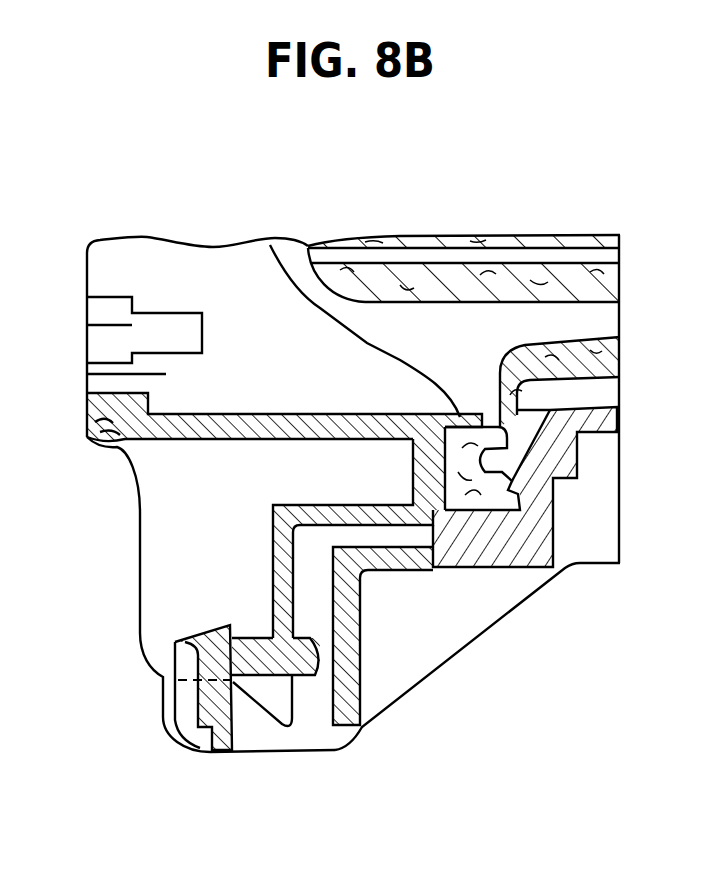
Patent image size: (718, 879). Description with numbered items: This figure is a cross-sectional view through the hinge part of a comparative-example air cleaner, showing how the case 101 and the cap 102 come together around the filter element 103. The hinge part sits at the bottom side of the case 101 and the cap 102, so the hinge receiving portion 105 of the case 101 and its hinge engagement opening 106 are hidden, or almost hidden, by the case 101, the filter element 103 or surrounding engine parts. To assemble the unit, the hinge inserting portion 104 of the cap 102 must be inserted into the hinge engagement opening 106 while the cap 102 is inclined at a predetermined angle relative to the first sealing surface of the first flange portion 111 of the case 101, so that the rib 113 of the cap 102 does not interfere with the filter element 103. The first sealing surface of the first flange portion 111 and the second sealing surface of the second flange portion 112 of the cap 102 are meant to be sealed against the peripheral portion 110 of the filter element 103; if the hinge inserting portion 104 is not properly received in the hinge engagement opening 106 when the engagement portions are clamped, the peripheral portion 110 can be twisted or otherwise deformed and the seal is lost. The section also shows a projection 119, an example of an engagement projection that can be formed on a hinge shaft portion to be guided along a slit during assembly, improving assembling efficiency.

The case 101 is at (612, 432).
The cap 102 is at (152, 433).
The filter element 103 is at (607, 282).
The hinge inserting portion 104 is at (275, 663).
The hinge receiving portion 105 is at (200, 722).
The hinge engagement opening 106 is at (335, 688).
The peripheral portion 110 is at (473, 457).
The first flange portion 111 is at (533, 497).
The second flange portion 112 is at (415, 427).
The rib 113 is at (270, 245).
The projection 119 is at (287, 722).